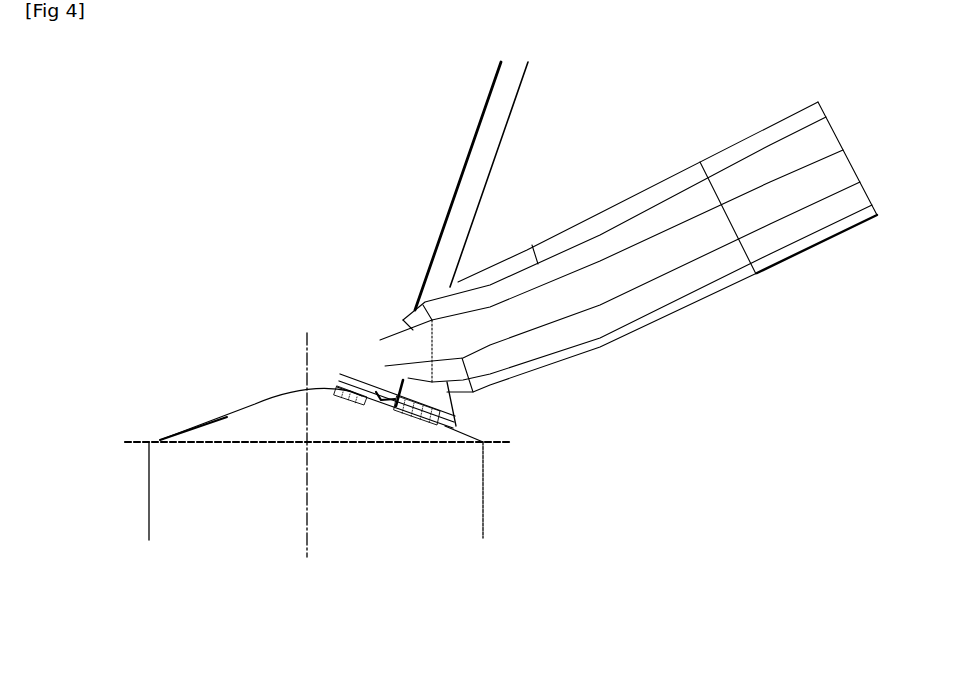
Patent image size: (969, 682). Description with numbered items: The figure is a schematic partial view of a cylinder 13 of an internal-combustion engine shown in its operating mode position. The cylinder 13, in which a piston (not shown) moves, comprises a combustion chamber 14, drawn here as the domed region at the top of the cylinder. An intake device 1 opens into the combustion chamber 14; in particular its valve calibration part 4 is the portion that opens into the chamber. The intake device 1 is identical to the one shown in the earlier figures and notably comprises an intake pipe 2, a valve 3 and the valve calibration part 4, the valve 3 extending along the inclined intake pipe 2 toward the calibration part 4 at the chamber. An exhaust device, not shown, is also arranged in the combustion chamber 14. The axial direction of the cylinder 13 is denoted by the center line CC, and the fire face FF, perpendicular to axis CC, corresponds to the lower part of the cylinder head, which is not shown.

The intake device 1 is at (380, 140).
The intake pipe 2 is at (710, 180).
The valve 3 is at (477, 178).
The valve calibration part 4 is at (347, 367).
The cylinder 13 is at (355, 506).
The combustion chamber 14 is at (273, 410).